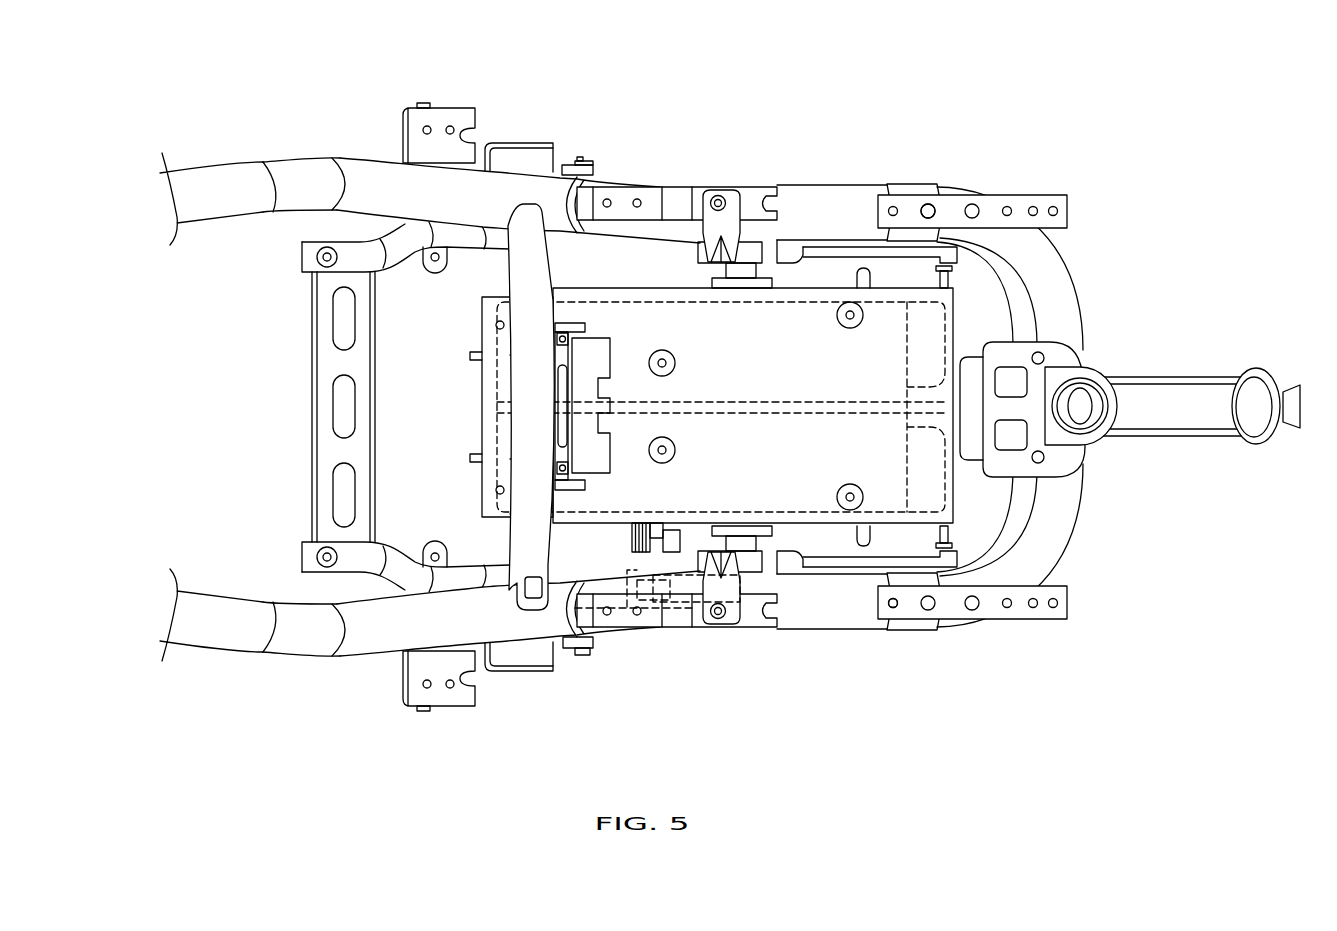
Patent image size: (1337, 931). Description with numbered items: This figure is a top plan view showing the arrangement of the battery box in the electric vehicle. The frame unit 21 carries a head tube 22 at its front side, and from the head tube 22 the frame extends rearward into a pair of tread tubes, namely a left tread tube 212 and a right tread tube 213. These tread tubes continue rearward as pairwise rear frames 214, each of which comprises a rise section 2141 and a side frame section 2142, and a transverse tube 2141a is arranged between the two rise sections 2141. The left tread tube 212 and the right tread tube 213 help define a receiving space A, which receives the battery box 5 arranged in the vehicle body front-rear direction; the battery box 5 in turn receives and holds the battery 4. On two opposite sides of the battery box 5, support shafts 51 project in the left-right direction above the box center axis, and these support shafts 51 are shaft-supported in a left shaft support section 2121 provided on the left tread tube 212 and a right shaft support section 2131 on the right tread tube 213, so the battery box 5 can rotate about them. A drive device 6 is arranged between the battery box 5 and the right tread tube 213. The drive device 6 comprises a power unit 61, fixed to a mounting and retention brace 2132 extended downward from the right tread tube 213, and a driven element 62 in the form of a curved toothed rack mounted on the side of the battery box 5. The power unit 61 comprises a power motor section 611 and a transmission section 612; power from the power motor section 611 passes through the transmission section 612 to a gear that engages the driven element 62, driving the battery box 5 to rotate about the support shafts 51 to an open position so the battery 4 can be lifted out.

The frame unit 21 is at (1082, 186).
The left tread tube 212 is at (820, 210).
The left shaft support section 2121 is at (747, 252).
The right tread tube 213 is at (855, 607).
The right shaft support section 2131 is at (750, 563).
The mounting and retention brace 2132 is at (852, 253).
The rear frames 214 is at (297, 148).
The rise section 2141 is at (380, 177).
The transverse tube 2141a is at (588, 157).
The side frame section 2142 is at (228, 178).
The head tube 22 is at (1198, 418).
The battery 4 is at (883, 317).
The battery box 5 is at (639, 290).
The support shafts 51 is at (720, 270).
The drive device 6 is at (630, 645).
The power unit 61 is at (651, 668).
The power motor section 611 is at (585, 657).
The transmission section 612 is at (677, 602).
The driven element 62 is at (632, 537).
The receiving space A is at (978, 302).